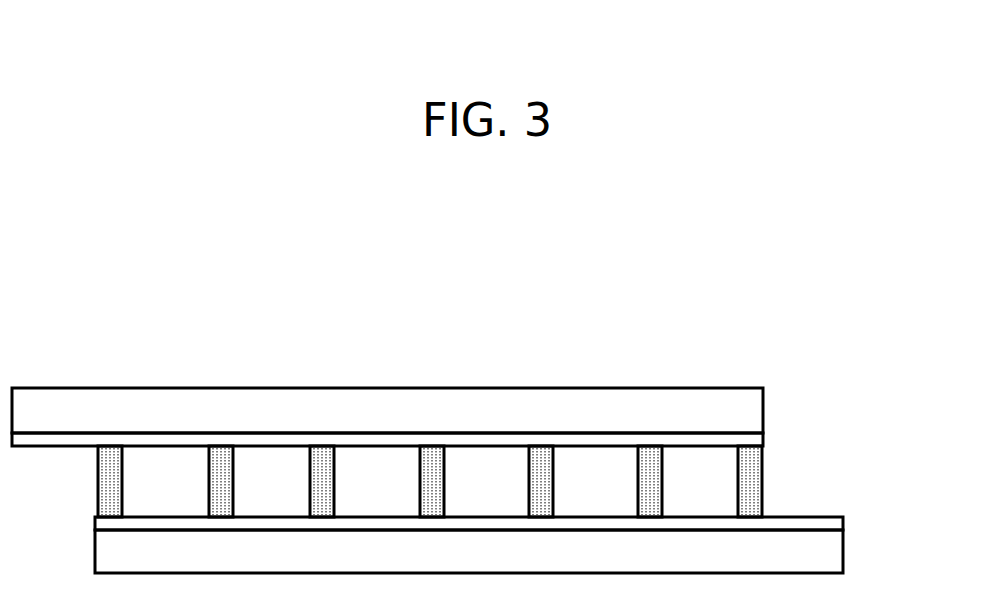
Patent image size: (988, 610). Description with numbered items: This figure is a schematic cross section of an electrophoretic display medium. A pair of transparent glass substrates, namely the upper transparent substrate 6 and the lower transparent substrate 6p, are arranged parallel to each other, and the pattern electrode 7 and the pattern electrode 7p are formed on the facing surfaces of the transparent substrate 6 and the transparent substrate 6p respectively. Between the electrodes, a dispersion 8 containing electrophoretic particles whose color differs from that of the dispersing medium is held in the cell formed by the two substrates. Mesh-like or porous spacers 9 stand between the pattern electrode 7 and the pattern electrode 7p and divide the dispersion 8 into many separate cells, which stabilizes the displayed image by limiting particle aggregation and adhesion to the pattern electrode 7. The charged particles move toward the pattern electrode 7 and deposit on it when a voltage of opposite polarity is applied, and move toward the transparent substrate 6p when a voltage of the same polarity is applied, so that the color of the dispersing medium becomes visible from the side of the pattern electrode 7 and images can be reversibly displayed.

The transparent substrate 6 is at (747, 405).
The pattern electrode 7 is at (750, 438).
The dispersion 8 is at (167, 462).
The spacer 9 is at (322, 460).
The pattern electrode 7p is at (828, 523).
The transparent substrate 6p is at (833, 558).